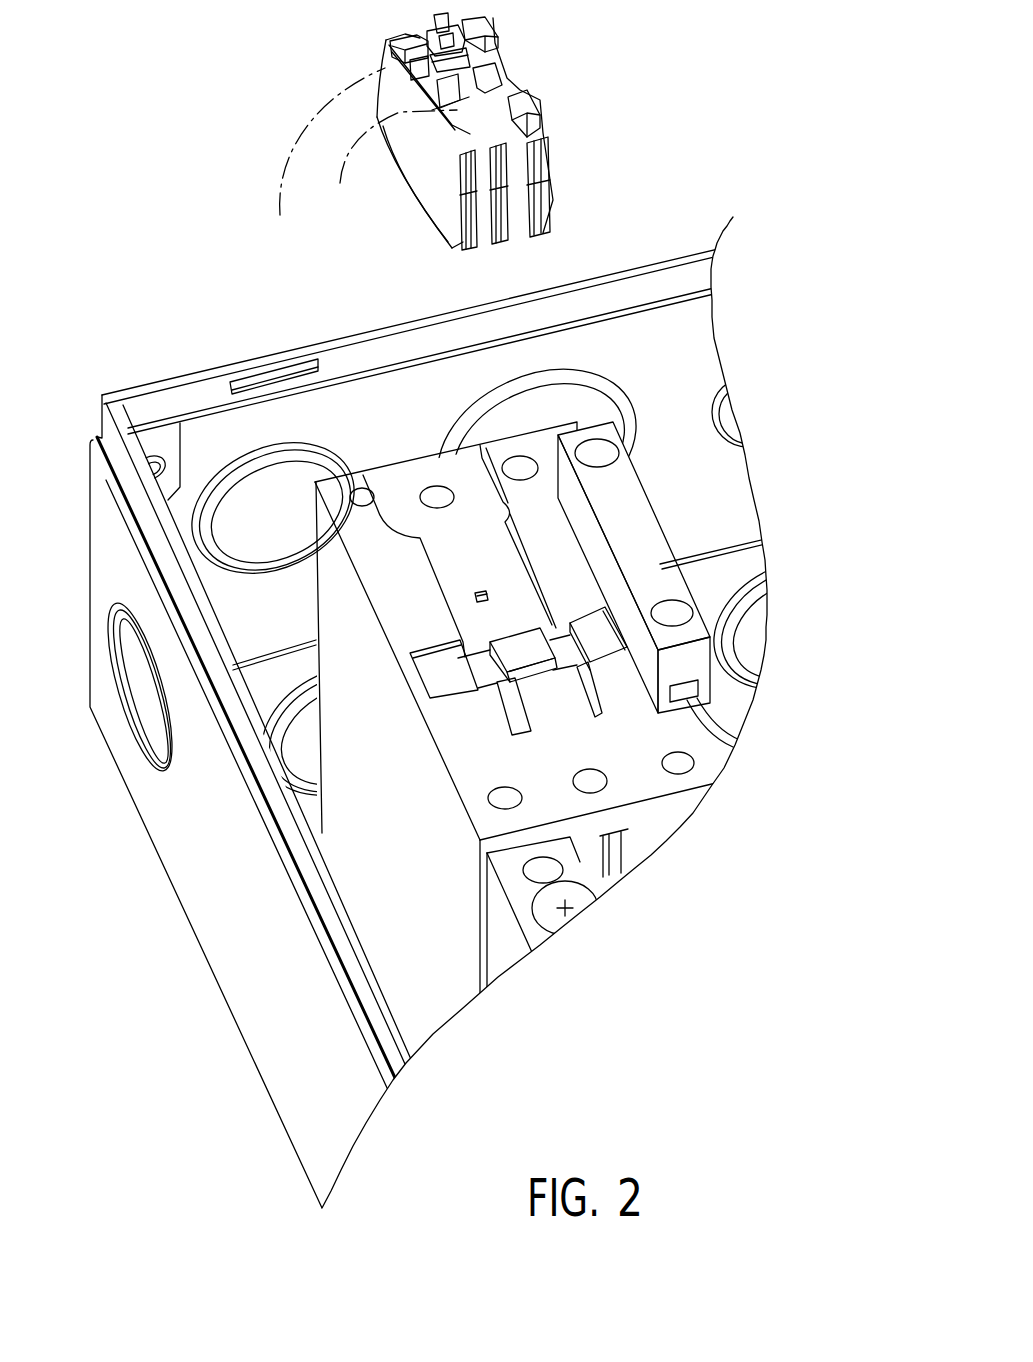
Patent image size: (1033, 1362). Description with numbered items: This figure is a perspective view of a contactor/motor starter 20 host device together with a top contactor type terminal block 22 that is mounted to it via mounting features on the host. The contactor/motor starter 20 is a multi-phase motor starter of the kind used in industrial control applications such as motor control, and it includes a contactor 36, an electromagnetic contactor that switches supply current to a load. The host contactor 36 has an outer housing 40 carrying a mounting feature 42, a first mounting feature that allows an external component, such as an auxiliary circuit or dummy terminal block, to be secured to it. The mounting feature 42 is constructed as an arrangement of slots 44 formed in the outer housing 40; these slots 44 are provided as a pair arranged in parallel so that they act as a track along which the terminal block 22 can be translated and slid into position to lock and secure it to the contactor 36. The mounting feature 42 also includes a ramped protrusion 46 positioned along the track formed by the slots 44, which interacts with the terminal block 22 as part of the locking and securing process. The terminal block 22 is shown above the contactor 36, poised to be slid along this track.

The contactor/motor starter 20 is at (437, 990).
The terminal block 22 is at (385, 93).
The contactor 36 is at (384, 573).
The outer housing 40 is at (562, 792).
The mounting feature 42 is at (610, 683).
The slots 44 is at (516, 728).
The ramped protrusion 46 is at (478, 600).